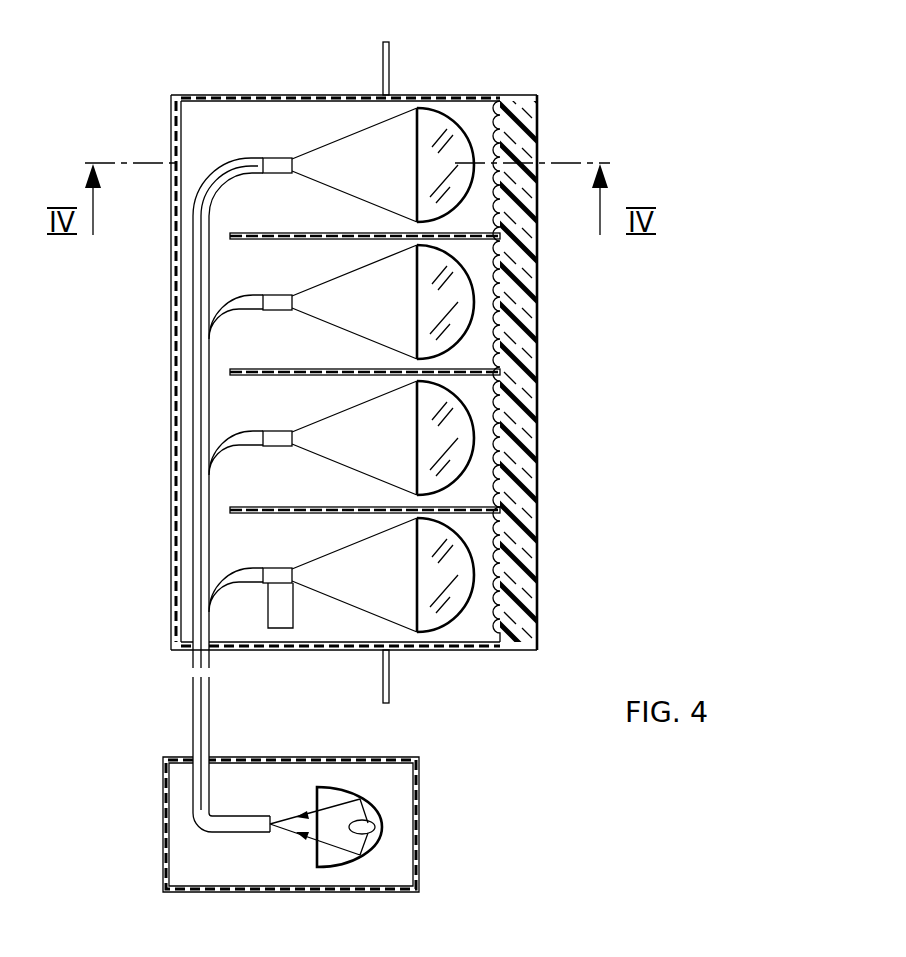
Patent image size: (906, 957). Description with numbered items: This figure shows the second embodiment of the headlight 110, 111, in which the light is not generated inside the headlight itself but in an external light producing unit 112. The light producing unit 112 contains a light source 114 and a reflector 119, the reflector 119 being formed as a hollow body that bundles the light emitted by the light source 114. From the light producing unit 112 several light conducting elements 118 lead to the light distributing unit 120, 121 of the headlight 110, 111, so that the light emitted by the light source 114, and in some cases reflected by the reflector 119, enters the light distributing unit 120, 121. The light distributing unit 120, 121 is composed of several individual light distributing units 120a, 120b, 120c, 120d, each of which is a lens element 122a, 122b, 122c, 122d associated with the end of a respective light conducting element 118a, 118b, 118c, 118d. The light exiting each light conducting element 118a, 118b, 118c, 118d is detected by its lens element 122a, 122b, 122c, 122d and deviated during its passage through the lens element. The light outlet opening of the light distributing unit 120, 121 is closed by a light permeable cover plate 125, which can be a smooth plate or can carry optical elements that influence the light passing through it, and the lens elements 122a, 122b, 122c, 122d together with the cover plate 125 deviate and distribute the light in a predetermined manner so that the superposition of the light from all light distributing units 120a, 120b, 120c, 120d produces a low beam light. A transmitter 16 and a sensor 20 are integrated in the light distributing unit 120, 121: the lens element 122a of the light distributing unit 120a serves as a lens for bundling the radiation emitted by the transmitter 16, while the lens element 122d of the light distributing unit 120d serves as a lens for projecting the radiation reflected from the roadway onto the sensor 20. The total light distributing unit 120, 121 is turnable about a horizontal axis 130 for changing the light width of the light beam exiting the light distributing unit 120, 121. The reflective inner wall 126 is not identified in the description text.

The headlight 110 is at (398, 325).
The headlight 111 is at (492, 64).
The external light producing unit 112 is at (440, 795).
The light source 114 is at (368, 830).
The reflector 119 is at (362, 855).
The light conducting elements 118 is at (200, 712).
The light conducting element 118a is at (198, 131).
The light conducting element 118b is at (222, 300).
The light conducting element 118c is at (222, 440).
The light conducting element 118d is at (222, 578).
The transmitter 16 is at (279, 174).
The sensor 20 is at (283, 617).
The light distributing unit 120 is at (340, 71).
The light distributing unit 121 is at (298, 108).
The light distributing unit 120a is at (160, 143).
The light distributing unit 120b is at (160, 268).
The light distributing unit 120c is at (160, 407).
The light distributing unit 120d is at (160, 535).
The lens element 122a is at (456, 146).
The lens element 122b is at (458, 290).
The lens element 122c is at (465, 440).
The lens element 122d is at (465, 575).
The light permeable cover plate 125 is at (488, 630).
The reflective wall 126 is at (527, 410).
The horizontal axis 130 is at (385, 673).